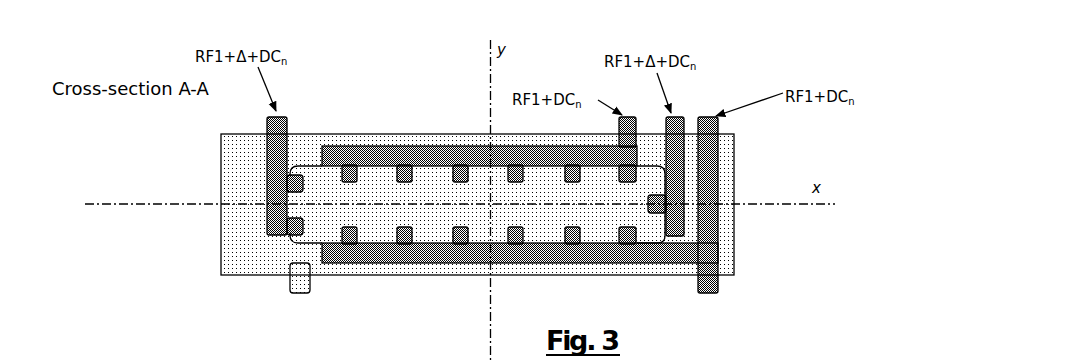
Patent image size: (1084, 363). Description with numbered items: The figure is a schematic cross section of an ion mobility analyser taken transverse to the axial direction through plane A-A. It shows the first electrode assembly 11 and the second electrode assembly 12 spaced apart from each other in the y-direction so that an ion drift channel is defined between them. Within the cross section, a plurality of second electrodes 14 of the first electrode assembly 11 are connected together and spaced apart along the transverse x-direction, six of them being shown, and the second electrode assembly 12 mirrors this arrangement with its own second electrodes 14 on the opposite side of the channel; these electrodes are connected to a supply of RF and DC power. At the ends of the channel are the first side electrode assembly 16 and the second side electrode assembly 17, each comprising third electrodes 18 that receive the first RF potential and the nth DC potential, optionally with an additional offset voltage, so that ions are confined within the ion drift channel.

The first electrode assembly 11 is at (404, 104).
The second electrode assembly 12 is at (678, 284).
The second electrodes 14 is at (350, 175).
The first side electrode assembly 16 is at (265, 113).
The second side electrode assembly 17 is at (687, 113).
The third electrodes 18 is at (290, 175).